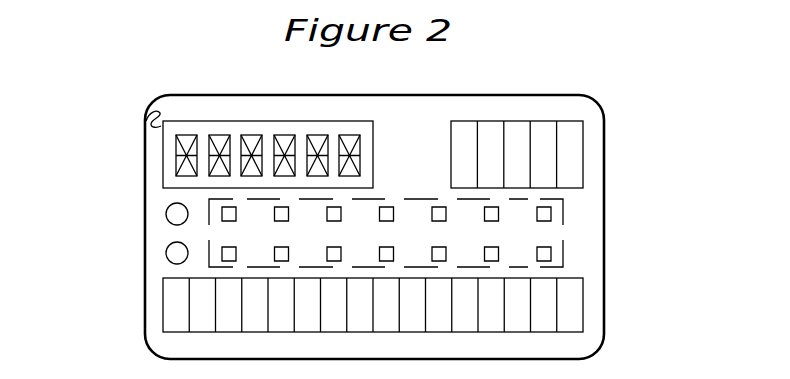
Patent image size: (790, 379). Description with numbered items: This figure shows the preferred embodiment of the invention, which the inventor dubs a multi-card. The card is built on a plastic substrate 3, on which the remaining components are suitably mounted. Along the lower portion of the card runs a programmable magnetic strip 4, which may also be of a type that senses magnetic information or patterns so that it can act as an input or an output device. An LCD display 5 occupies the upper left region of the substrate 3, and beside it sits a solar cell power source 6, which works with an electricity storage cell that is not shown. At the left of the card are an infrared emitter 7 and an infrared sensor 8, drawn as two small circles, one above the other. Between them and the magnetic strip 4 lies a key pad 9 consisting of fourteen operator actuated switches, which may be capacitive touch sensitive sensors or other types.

The plastic substrate 3 is at (146, 121).
The programmable magnetic strip 4 is at (591, 317).
The LCD display 5 is at (162, 170).
The solar cell power source 6 is at (589, 154).
The infrared emitter 7 is at (166, 214).
The infrared sensor 8 is at (166, 253).
The key pad 9 is at (569, 215).